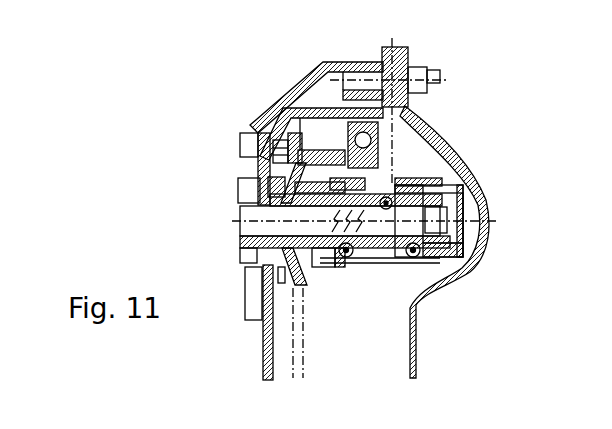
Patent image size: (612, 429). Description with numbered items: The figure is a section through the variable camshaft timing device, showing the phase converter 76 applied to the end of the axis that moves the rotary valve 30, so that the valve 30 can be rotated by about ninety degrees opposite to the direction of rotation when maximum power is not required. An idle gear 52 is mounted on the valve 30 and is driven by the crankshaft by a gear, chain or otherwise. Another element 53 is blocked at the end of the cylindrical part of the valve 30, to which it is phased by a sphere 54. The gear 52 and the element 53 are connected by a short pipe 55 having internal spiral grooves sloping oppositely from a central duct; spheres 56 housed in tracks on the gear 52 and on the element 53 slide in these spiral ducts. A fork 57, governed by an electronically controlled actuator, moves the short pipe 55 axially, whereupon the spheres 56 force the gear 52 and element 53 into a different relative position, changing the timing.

The phase converter 76 is at (245, 94).
The fork 57 is at (341, 134).
The short pipe 55 is at (394, 178).
The sphere 54 is at (432, 181).
The valve 30 is at (262, 213).
The element 53 is at (463, 280).
The spheres 56 is at (409, 254).
The idle gear 52 is at (302, 303).